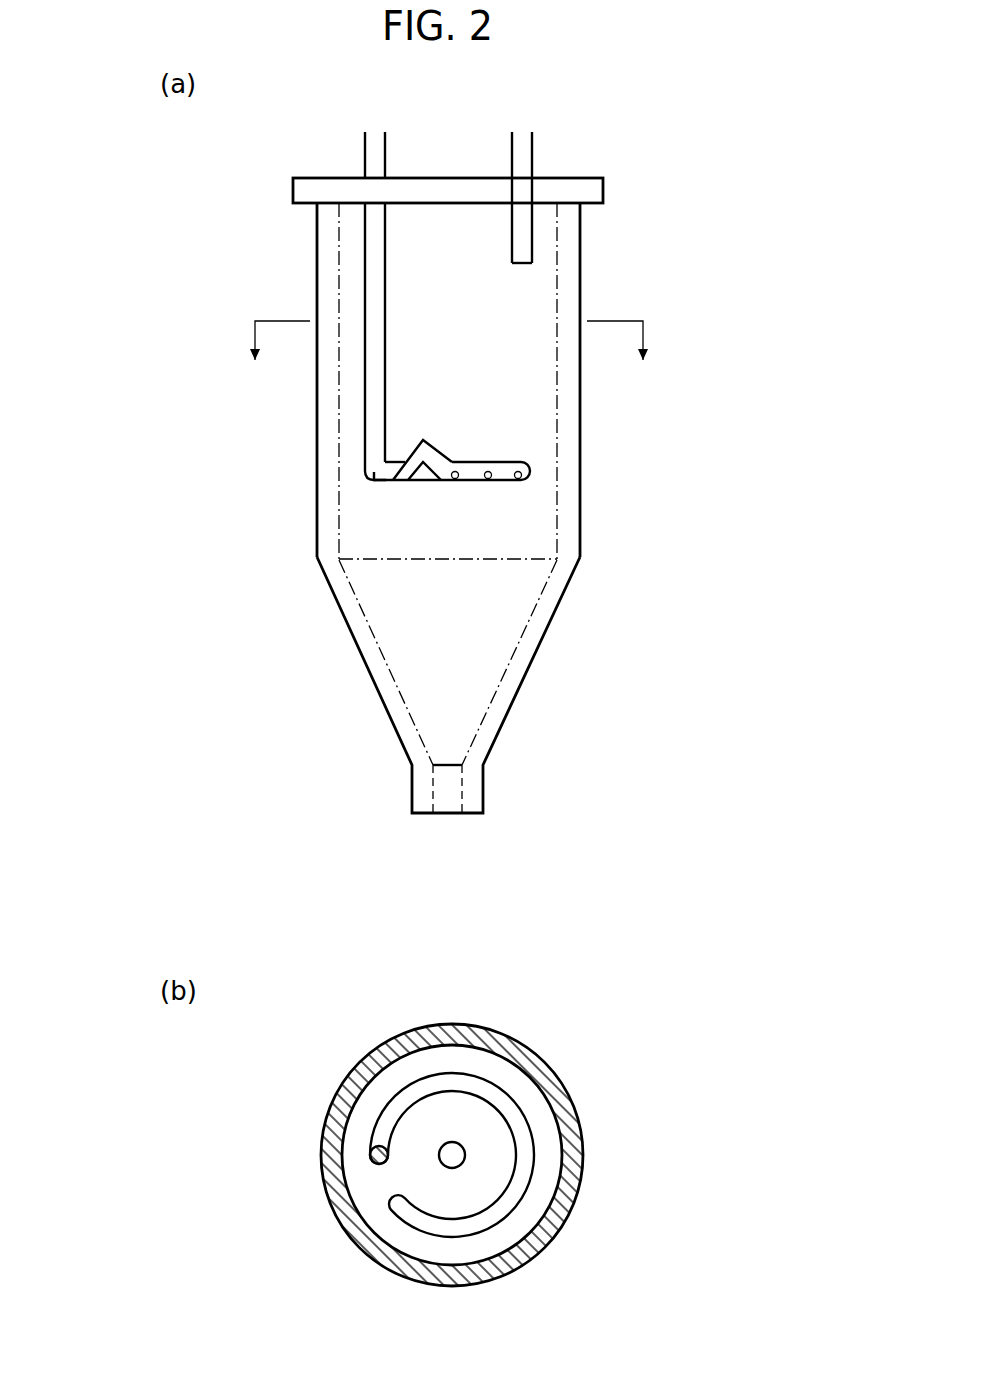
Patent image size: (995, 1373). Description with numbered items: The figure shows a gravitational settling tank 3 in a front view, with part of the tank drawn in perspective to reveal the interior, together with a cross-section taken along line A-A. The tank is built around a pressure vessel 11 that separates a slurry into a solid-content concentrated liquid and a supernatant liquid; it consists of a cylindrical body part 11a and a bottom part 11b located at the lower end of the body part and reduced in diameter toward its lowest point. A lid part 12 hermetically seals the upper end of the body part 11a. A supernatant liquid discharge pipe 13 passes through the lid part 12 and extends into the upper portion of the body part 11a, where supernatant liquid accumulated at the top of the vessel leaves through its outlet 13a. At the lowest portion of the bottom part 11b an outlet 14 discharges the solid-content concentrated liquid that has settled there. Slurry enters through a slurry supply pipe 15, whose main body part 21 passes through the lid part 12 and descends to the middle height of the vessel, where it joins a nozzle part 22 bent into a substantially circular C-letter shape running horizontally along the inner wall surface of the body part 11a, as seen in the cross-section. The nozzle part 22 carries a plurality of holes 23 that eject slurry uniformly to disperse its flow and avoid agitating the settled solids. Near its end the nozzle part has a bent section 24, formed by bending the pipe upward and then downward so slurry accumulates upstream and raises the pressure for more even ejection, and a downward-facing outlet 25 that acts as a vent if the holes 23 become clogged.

The gravitational settling tank 3 is at (196, 242).
The pressure vessel 11 is at (210, 490).
The body part 11a is at (328, 517).
The bottom part 11b is at (348, 610).
The lid part 12 is at (577, 191).
The supernatant liquid discharge pipe 13 is at (538, 149).
The outlet 13a is at (521, 266).
The outlet 14 is at (447, 823).
The slurry supply pipe 15 is at (358, 158).
The main body part 21 is at (377, 278).
The nozzle part 22 is at (504, 470).
The holes 23 is at (458, 478).
The bent section 24 is at (453, 439).
The outlet 25 is at (389, 483).